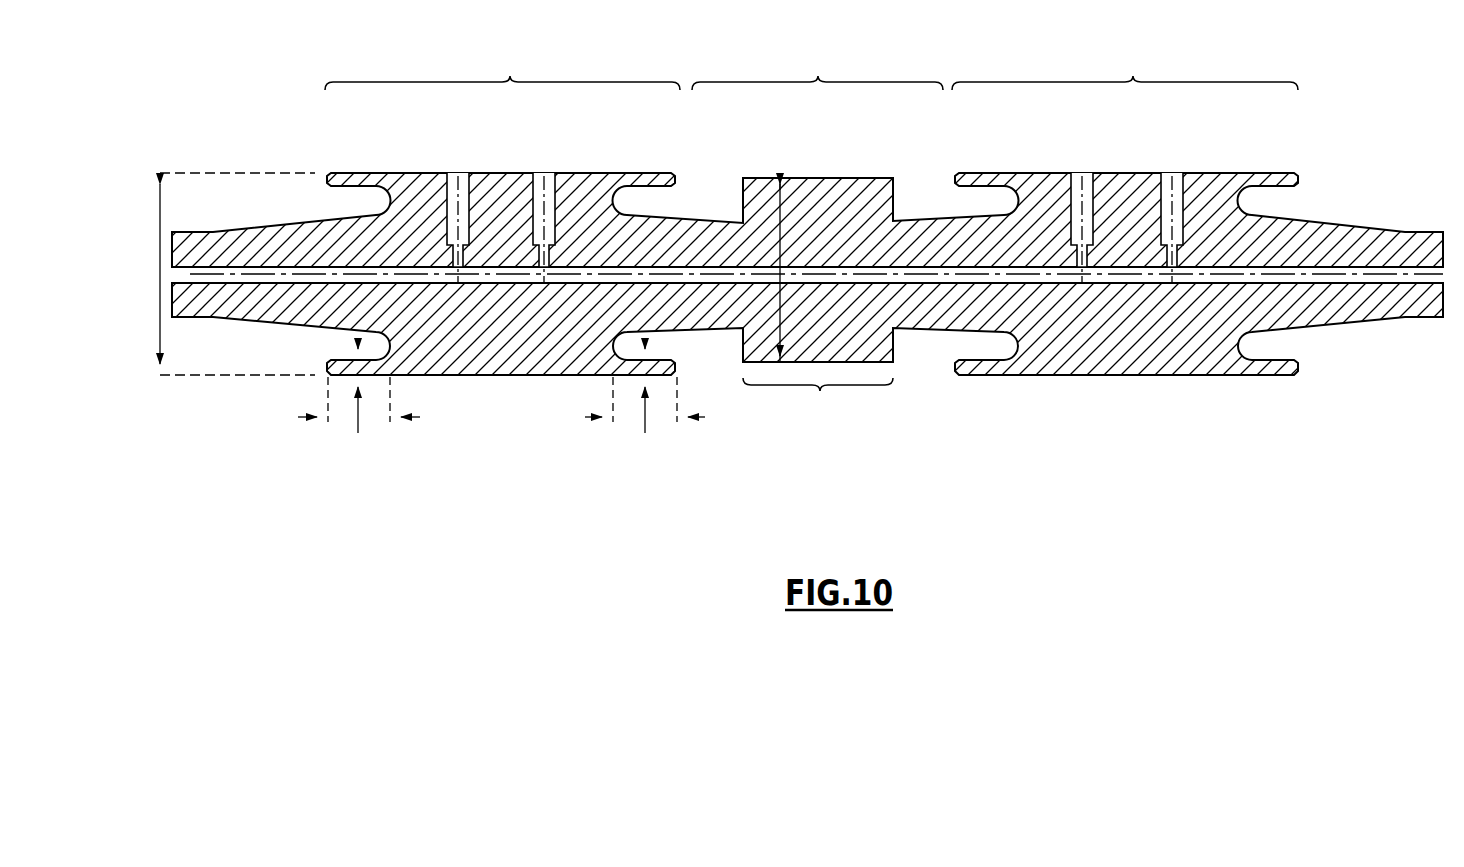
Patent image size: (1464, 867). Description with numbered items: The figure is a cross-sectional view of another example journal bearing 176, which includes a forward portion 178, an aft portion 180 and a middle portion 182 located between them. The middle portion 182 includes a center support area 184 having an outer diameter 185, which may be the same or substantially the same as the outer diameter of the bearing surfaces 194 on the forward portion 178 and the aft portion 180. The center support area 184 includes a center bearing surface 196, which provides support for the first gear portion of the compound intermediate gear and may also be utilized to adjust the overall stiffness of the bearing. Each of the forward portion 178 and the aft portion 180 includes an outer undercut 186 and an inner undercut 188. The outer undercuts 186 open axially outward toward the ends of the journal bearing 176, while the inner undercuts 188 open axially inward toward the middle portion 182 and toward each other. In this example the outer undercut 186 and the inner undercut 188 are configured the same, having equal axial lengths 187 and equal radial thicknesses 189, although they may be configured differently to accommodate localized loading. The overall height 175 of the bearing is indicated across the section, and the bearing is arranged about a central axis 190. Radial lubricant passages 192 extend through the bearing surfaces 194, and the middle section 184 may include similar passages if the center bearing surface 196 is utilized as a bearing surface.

The overall height of the rotor segment 175 is at (160, 273).
The journal bearing 176 is at (1168, 478).
The forward portion 178 is at (510, 76).
The aft portion 180 is at (1133, 76).
The middle portion 182 is at (818, 76).
The center support area 184 is at (820, 391).
The outer diameter 185 is at (781, 193).
The outer undercut 186 is at (310, 352).
The axial length 187 is at (420, 417).
The inner undercut 188 is at (697, 364).
The radial thickness 189 is at (358, 427).
The central axis 190 is at (1332, 275).
The radial lubricant passages 192 is at (1087, 203).
The bearing surfaces 194 is at (500, 162).
The center bearing surface 196 is at (822, 167).